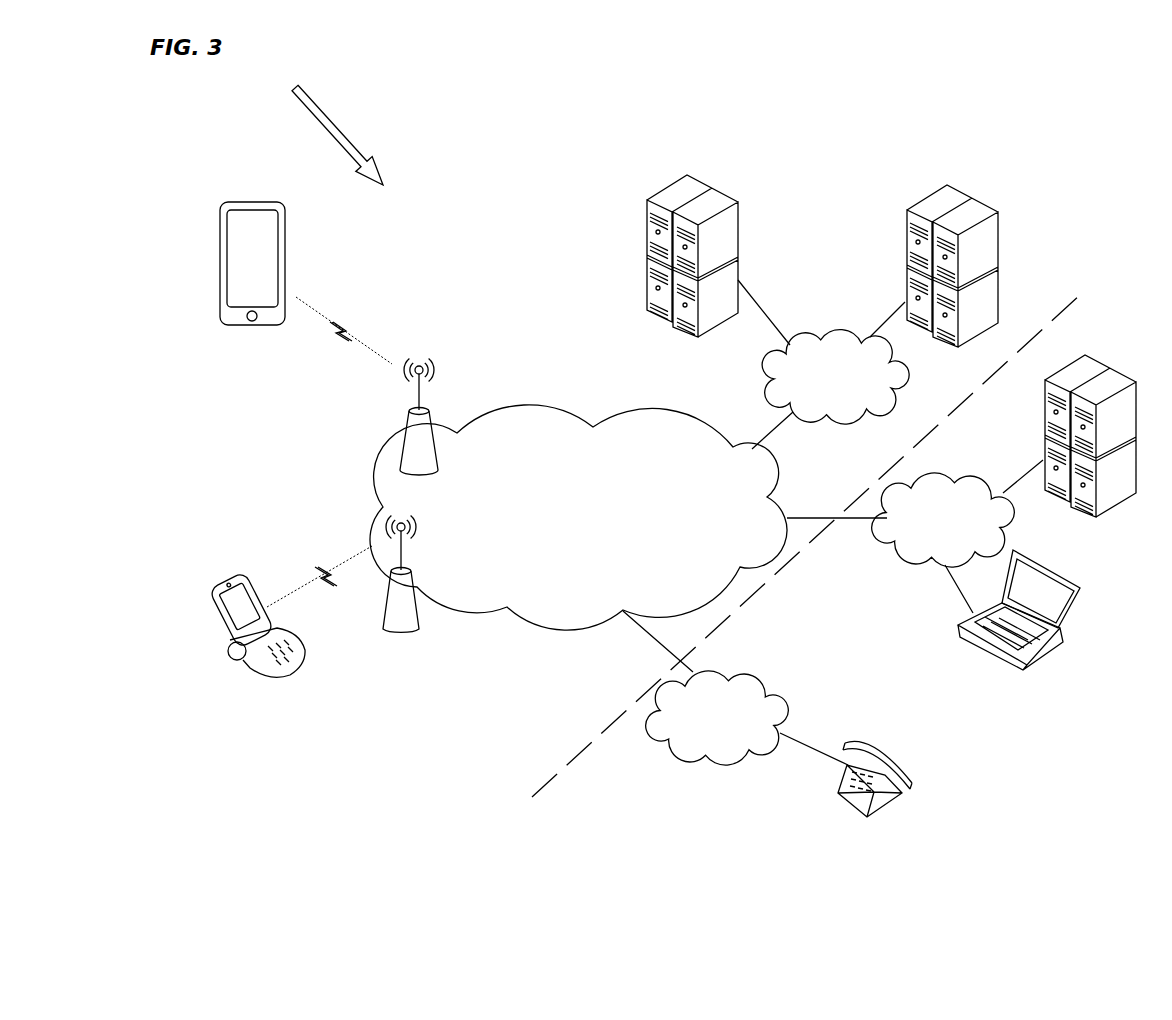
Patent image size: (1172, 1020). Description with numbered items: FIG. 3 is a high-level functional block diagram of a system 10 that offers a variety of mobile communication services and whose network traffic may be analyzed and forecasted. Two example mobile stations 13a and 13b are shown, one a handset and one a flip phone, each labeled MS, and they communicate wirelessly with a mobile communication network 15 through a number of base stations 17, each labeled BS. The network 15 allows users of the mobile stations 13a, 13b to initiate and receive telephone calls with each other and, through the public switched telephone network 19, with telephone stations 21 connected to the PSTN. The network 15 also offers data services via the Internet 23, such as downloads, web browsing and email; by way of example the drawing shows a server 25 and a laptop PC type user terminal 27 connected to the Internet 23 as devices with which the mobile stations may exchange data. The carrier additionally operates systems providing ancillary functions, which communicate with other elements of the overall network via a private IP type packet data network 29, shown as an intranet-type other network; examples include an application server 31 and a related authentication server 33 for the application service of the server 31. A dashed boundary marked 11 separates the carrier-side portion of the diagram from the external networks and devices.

The system 10 is at (328, 125).
The carrier network boundary 11 is at (806, 546).
The mobile station 13a is at (203, 602).
The mobile station 13b is at (220, 245).
The mobile communication network 15 is at (486, 412).
The base station 17 is at (400, 430).
The public switched telephone network 19 is at (783, 700).
The telephone station 21 is at (838, 798).
The Internet 23 is at (893, 557).
The server 25 is at (1040, 440).
The laptop PC type user terminal 27 is at (985, 657).
The private IP type packet data network 29 is at (903, 390).
The application server 31 is at (738, 213).
The authentication server 33 is at (1000, 272).